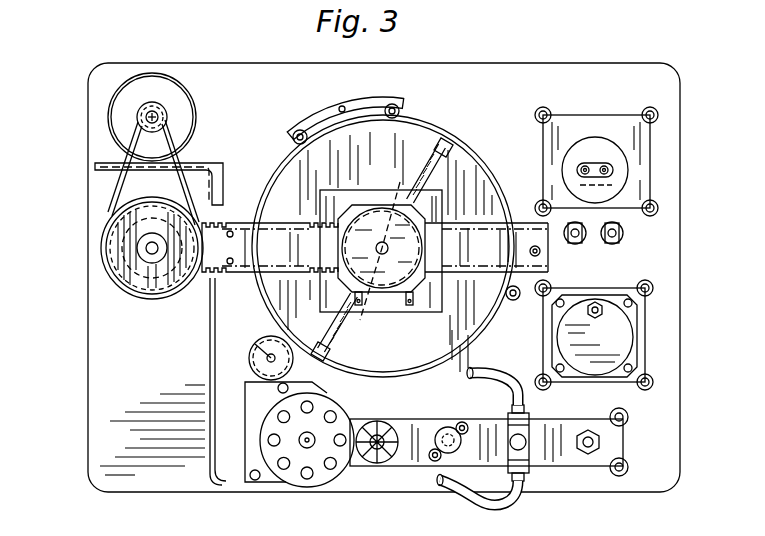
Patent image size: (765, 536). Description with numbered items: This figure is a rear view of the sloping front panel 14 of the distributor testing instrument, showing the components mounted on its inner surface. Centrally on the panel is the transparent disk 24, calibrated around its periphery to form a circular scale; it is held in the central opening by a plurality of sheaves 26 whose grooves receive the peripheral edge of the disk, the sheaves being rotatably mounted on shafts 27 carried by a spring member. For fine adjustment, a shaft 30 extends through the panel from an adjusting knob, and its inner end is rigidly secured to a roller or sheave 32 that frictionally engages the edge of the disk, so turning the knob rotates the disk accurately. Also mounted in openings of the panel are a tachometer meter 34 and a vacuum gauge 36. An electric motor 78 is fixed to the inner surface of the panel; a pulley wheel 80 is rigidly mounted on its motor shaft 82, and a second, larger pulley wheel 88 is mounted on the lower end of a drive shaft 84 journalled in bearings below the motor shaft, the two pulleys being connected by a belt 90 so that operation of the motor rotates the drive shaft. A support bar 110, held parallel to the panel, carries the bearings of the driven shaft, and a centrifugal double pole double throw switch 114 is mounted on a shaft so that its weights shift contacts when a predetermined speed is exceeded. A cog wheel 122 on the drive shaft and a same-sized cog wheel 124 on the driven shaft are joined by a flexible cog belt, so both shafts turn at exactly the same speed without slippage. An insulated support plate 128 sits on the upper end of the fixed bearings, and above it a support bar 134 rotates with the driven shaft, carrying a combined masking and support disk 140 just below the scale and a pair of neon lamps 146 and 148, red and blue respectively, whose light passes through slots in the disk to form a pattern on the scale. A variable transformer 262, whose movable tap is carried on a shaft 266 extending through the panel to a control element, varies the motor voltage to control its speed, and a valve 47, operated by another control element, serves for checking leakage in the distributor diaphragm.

The front panel 14 is at (509, 96).
The transparent disk 24 is at (473, 163).
The sheaves 26 is at (293, 138).
The shafts 27 is at (324, 86).
The shaft 30 is at (255, 348).
The roller or sheave 32 is at (260, 332).
The tachometer meter 34 is at (604, 155).
The vacuum gauge 36 is at (594, 335).
The valve 47 is at (528, 455).
The electric motor 78 is at (161, 94).
The pulley wheel 80 is at (143, 116).
The motor shaft 82 is at (147, 120).
The drive shaft 84 is at (150, 250).
The second pulley wheel 88 is at (124, 262).
The belt 90 is at (110, 192).
The support bar 110 is at (277, 255).
The centrifugal double pole double throw switch 114 is at (443, 265).
The cog wheel 122 is at (143, 292).
The cog wheel 124 is at (428, 245).
The second insulated support plate 128 is at (340, 198).
The support bar 134 is at (397, 186).
The combined masking and support disk 140 is at (446, 340).
The neon lamp 146 is at (342, 337).
The neon lamp 148 is at (422, 163).
The variable transformer 262 is at (275, 489).
The shaft 266 is at (307, 450).